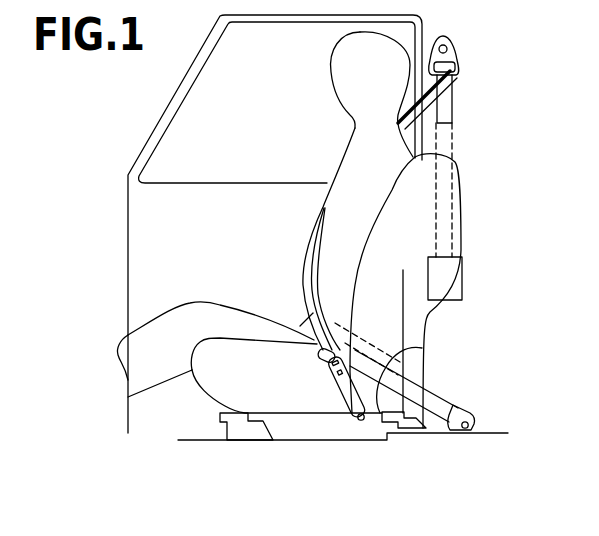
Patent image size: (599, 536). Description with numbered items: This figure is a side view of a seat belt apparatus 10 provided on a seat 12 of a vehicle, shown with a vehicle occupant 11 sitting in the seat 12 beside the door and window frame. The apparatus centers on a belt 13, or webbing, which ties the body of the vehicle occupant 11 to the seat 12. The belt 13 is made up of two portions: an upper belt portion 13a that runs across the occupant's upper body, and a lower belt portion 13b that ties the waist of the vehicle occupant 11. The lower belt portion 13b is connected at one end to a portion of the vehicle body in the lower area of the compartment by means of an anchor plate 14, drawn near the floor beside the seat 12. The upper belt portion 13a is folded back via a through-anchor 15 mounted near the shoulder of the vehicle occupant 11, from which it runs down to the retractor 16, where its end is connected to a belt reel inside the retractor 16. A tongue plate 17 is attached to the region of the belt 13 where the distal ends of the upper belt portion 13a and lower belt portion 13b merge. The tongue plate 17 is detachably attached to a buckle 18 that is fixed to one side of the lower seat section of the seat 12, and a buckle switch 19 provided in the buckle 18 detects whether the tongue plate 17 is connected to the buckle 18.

The seat belt apparatus 10 is at (477, 269).
The vehicle occupant 11 is at (358, 180).
The seat 12 is at (393, 310).
The belt 13 is at (304, 282).
The upper belt portion 13a is at (465, 116).
The lower belt portion 13b is at (432, 385).
The anchor plate 14 is at (474, 411).
The through-anchor 15 is at (456, 61).
The retractor 16 is at (462, 268).
The tongue plate 17 is at (318, 358).
The buckle 18 is at (422, 348).
The buckle switch 19 is at (334, 368).